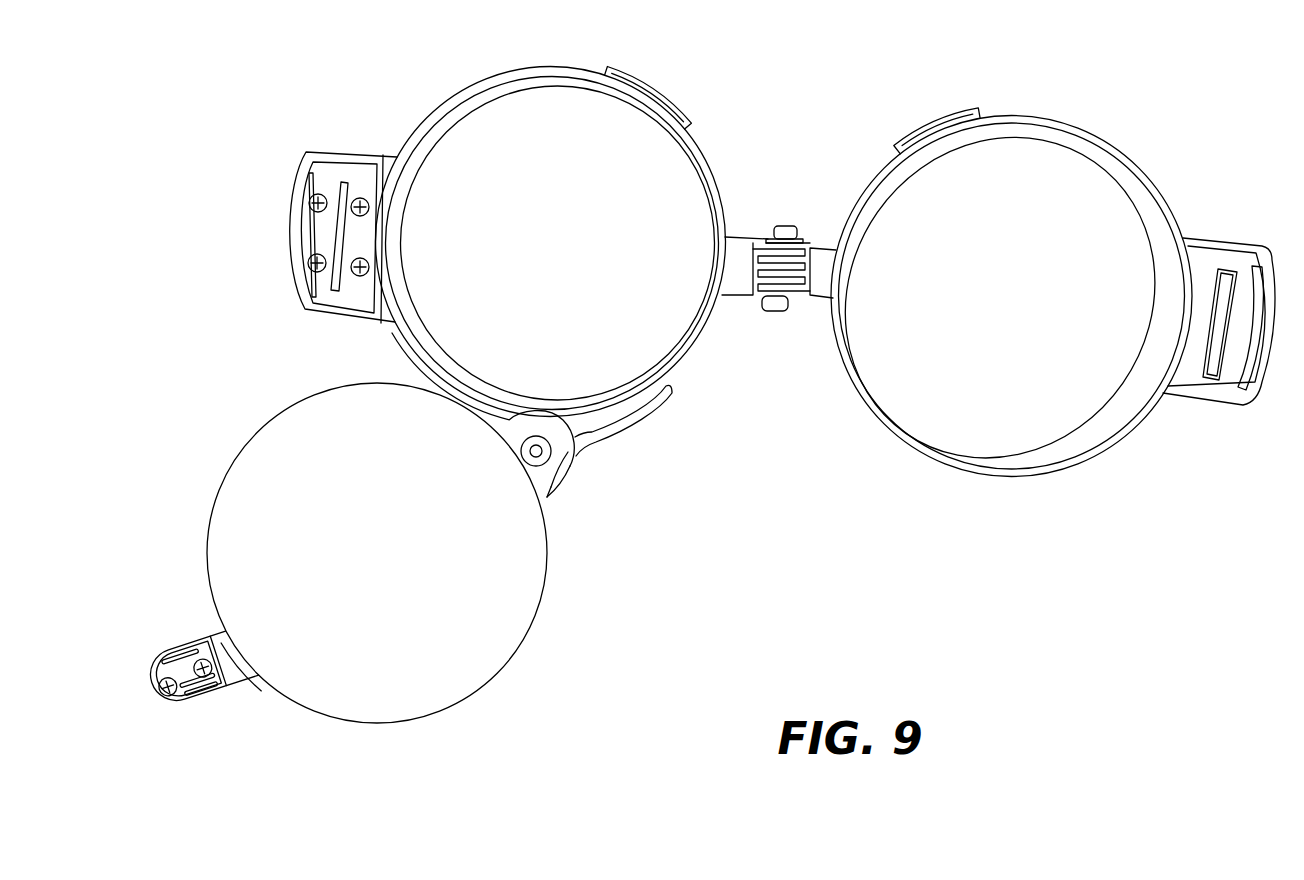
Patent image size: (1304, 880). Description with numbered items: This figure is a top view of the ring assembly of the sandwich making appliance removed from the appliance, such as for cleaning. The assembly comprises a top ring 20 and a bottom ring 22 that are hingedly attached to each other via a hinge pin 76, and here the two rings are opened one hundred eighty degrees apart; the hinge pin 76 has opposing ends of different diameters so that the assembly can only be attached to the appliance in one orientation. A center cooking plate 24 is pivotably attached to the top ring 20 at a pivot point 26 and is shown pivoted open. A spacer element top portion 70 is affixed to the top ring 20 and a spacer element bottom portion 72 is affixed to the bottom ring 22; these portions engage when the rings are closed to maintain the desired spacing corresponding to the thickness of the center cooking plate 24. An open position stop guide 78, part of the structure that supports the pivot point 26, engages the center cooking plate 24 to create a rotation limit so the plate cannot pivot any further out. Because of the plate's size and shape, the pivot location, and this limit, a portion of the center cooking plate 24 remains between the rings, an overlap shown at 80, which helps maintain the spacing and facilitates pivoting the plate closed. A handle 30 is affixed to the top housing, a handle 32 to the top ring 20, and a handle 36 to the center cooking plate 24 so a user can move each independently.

The top ring 20 is at (436, 113).
The bottom ring 22 is at (1112, 151).
The center cooking plate 24 is at (532, 588).
The pivot point 26 is at (542, 450).
The handle 30 is at (323, 168).
The handle 32 is at (1218, 258).
The handle 36 is at (190, 708).
The spacer element top portion 70 is at (663, 95).
The spacer element bottom portion 72 is at (913, 134).
The hinge pin 76 is at (771, 313).
The open position stop guide 78 is at (548, 526).
The overlap 80 is at (553, 411).